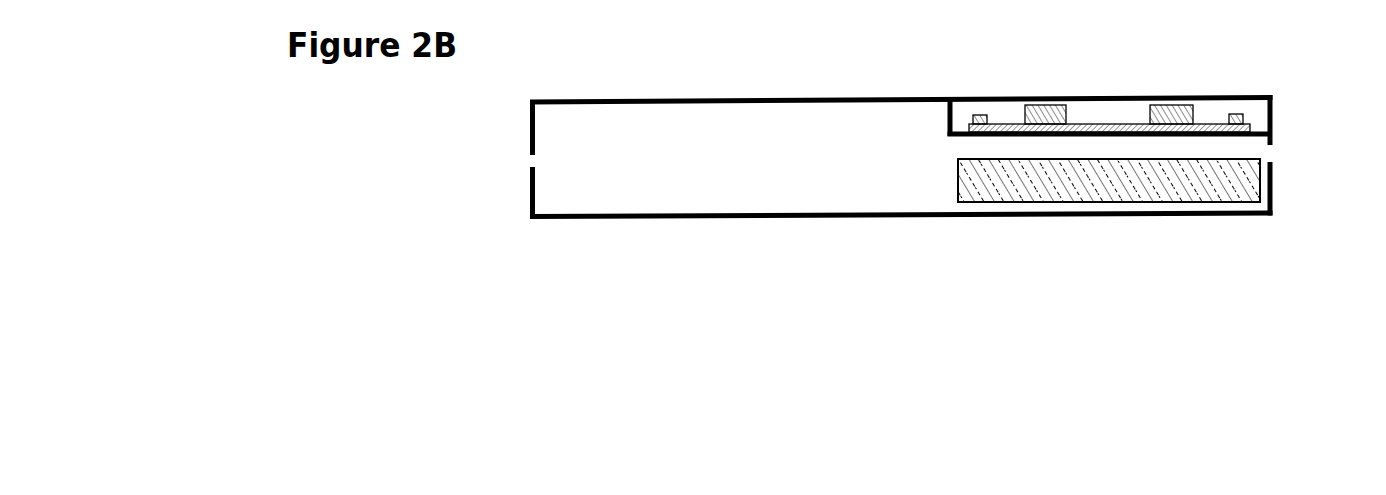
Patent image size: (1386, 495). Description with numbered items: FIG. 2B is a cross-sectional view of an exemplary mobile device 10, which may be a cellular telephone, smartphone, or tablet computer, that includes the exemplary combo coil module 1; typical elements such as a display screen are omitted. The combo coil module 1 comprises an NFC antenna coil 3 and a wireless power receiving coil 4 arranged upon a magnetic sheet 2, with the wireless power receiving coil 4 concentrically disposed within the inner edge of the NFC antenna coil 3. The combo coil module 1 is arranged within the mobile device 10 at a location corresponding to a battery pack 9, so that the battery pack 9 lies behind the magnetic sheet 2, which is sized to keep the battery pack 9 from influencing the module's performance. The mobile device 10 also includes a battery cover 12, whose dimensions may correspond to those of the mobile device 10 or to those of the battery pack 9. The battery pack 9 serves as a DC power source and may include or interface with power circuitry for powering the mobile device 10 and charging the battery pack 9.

The combo coil module 1 is at (1245, 106).
The magnetic sheet 2 is at (1250, 127).
The NFC antenna coil 3 is at (979, 115).
The wireless power receiving coil 4 is at (1045, 105).
The battery pack 9 is at (1247, 183).
The mobile device 10 is at (781, 266).
The battery cover 12 is at (866, 98).